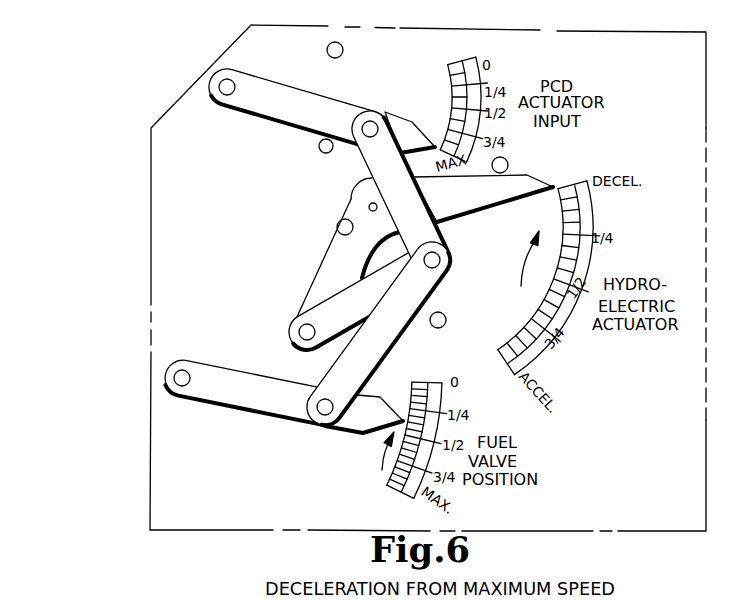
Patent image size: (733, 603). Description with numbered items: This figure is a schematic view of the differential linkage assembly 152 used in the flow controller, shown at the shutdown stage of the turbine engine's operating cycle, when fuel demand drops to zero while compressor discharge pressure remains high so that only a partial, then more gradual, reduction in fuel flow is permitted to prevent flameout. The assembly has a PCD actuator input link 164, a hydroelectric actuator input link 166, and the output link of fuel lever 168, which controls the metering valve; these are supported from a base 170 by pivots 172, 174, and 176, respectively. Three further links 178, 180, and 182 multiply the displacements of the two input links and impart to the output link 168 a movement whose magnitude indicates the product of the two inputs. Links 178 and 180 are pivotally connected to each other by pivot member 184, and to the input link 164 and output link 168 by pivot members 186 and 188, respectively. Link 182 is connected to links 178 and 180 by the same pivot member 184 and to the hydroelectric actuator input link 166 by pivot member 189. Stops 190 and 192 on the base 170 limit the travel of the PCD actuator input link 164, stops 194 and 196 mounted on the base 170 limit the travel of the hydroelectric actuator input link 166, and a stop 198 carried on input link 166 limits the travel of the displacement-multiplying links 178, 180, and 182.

The differential linkage assembly 152 is at (164, 69).
The PCD actuator input link 164 is at (285, 92).
The hydroelectric actuator input link 166 is at (324, 254).
The fuel lever output link 168 is at (238, 406).
The base 170 is at (150, 324).
The pivot 172 is at (222, 93).
The pivot 174 is at (369, 205).
The pivot 176 is at (186, 371).
The link 178 is at (365, 168).
The link 180 is at (390, 350).
The link 182 is at (332, 303).
The pivot member 184 is at (440, 260).
The pivot member 186 is at (373, 121).
The pivot member 188 is at (323, 415).
The pivot member 189 is at (300, 331).
The stop 190 is at (334, 42).
The stop 192 is at (319, 146).
The stop 194 is at (508, 163).
The stop 196 is at (444, 316).
The stop 198 is at (337, 226).